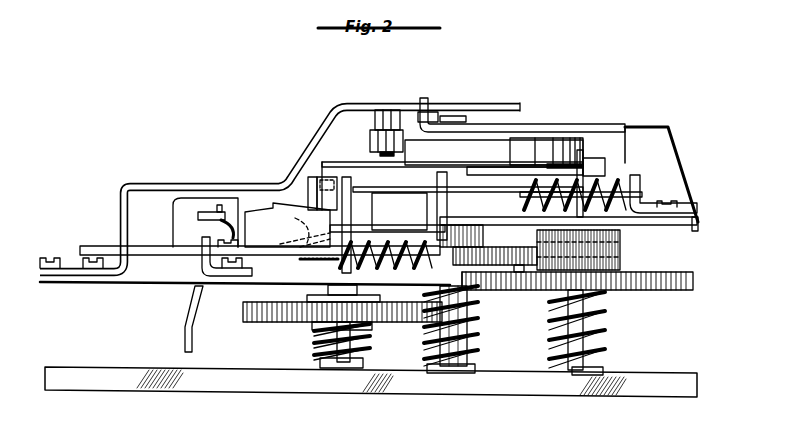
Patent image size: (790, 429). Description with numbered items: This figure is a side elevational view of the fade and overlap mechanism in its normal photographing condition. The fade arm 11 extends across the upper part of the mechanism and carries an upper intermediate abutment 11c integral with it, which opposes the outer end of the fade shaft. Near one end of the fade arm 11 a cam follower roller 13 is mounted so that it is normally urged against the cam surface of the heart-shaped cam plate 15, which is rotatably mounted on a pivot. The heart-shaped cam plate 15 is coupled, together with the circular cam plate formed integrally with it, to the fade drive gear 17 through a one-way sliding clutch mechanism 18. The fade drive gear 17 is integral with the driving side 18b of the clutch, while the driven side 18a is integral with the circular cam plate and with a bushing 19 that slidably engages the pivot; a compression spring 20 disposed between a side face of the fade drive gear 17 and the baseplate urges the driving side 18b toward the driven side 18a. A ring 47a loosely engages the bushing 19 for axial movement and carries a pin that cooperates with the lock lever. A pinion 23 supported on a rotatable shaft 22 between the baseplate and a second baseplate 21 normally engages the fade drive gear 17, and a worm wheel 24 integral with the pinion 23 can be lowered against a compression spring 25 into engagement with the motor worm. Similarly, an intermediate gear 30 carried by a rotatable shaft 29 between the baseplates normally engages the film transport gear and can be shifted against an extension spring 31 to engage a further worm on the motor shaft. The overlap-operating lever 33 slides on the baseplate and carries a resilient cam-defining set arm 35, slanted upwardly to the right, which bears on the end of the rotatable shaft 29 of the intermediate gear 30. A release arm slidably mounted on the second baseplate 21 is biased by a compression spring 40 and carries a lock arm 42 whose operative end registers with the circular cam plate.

The fade arm 11 is at (383, 103).
The upper intermediate abutment 11c is at (193, 343).
The cam follower roller 13 is at (378, 141).
The heart-shaped cam plate 15 is at (527, 140).
The fade drive gear 17 is at (518, 280).
The one-way sliding clutch mechanism 18 is at (418, 195).
The driven side 18a is at (386, 193).
The driving side 18b is at (399, 211).
The bushing 19 is at (472, 238).
The compression spring 20 is at (474, 348).
The second baseplate 21 is at (676, 229).
The rotatable shaft 22 is at (587, 303).
The pinion 23 is at (620, 250).
The worm wheel 24 is at (680, 292).
The compression spring 25 is at (592, 358).
The rotatable shaft 29 is at (320, 330).
The intermediate gear 30 is at (243, 310).
The extension spring 31 is at (320, 359).
The overlap-operating lever 33 is at (147, 242).
The cam-defining set arm 35 is at (287, 225).
The compression spring 40 is at (618, 185).
The lock arm 42 is at (605, 165).
The ring 47a is at (470, 291).